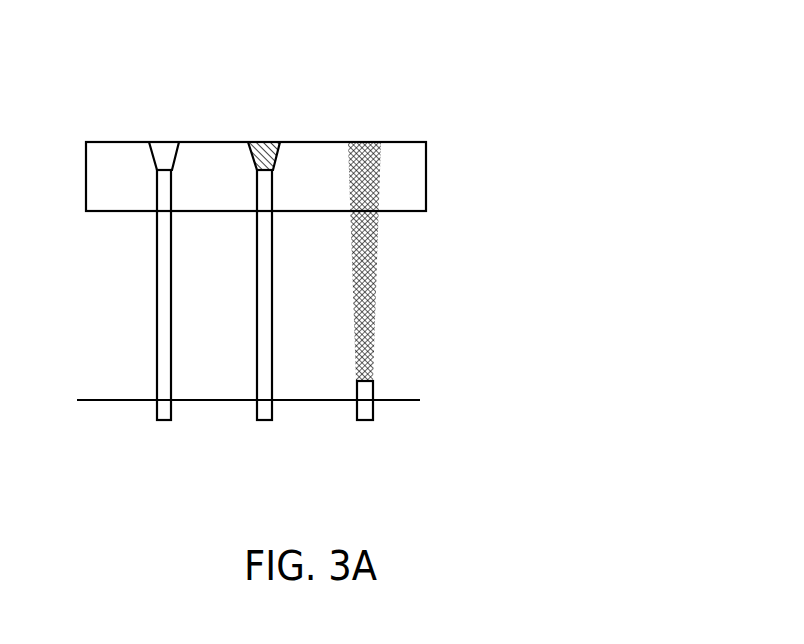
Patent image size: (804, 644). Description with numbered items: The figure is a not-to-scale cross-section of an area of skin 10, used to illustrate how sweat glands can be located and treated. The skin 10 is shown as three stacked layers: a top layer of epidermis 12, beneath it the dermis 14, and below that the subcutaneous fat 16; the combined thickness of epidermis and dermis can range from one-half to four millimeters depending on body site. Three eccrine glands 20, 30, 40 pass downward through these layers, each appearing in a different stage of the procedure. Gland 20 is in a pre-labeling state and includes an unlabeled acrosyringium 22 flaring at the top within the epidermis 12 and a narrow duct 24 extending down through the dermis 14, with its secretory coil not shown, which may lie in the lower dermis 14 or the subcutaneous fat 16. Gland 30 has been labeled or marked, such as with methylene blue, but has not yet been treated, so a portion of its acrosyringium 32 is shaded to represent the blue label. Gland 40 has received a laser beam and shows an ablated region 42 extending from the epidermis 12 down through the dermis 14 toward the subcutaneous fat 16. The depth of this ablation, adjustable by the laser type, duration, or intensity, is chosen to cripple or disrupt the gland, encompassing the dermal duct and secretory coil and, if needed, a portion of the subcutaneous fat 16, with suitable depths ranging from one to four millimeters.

The skin 10 is at (367, 263).
The epidermis 12 is at (466, 180).
The dermis 14 is at (466, 293).
The subcutaneous fat 16 is at (467, 430).
The eccrine gland 20 is at (167, 273).
The acrosyringium 22 is at (177, 162).
The duct 24 is at (157, 295).
The eccrine gland 30 is at (275, 273).
The acrosyringium 32 is at (278, 162).
The eccrine gland 40 is at (358, 278).
The ablated region 42 is at (377, 262).